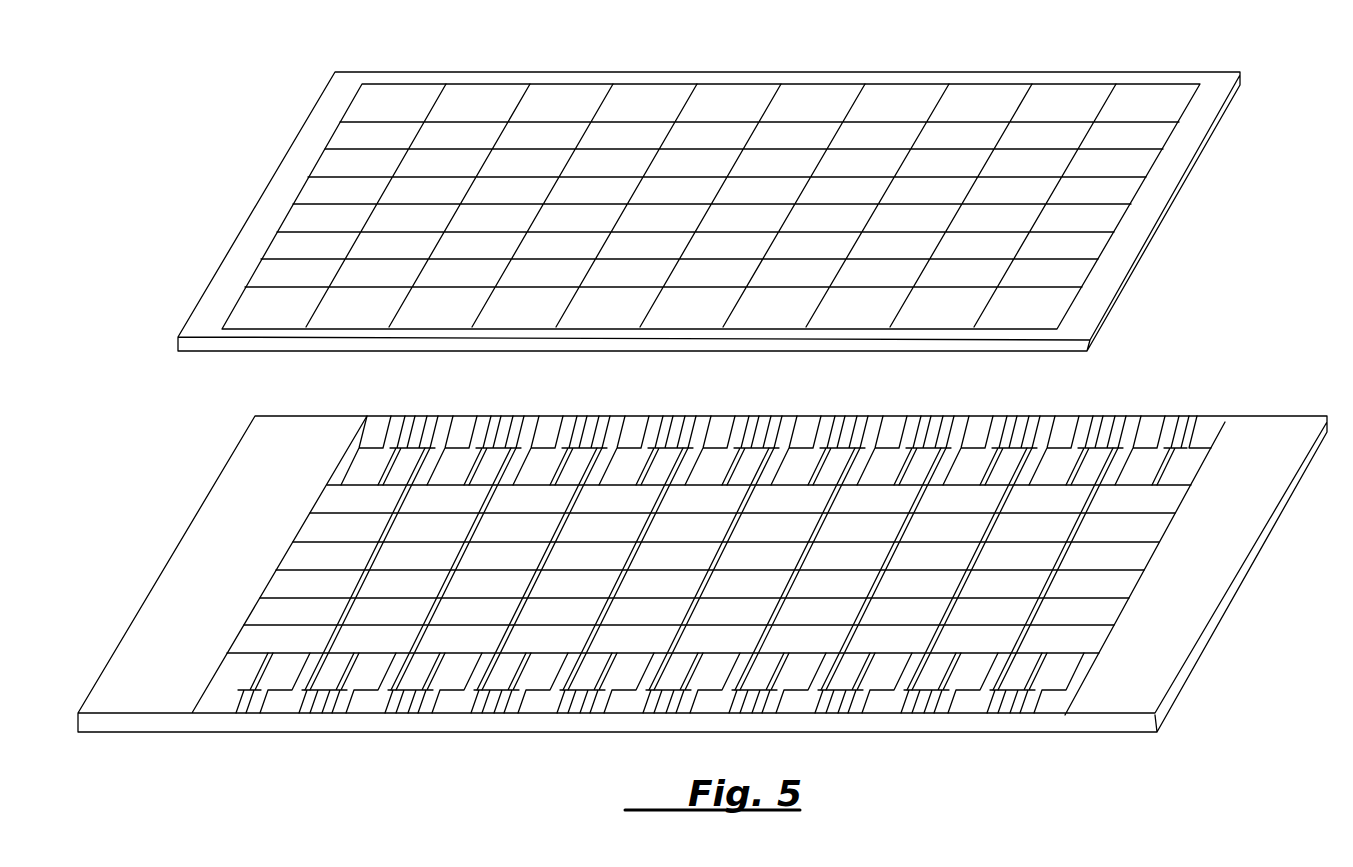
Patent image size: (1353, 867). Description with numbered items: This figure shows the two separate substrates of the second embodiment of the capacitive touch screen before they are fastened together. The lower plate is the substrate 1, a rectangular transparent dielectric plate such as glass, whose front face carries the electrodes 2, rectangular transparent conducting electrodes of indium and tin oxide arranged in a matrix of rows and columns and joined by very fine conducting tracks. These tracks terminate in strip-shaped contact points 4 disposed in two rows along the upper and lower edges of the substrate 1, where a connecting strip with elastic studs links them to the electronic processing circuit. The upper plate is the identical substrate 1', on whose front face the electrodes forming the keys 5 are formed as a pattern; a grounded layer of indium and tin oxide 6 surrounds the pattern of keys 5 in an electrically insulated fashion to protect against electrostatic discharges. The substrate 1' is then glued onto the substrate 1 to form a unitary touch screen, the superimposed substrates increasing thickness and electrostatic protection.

The substrate 1 is at (702, 605).
The substrate 1' is at (709, 188).
The electrodes 2 is at (1122, 470).
The contact points 4 is at (688, 430).
The keys 5 is at (557, 137).
The layer of indium and tin oxide 6 is at (275, 203).